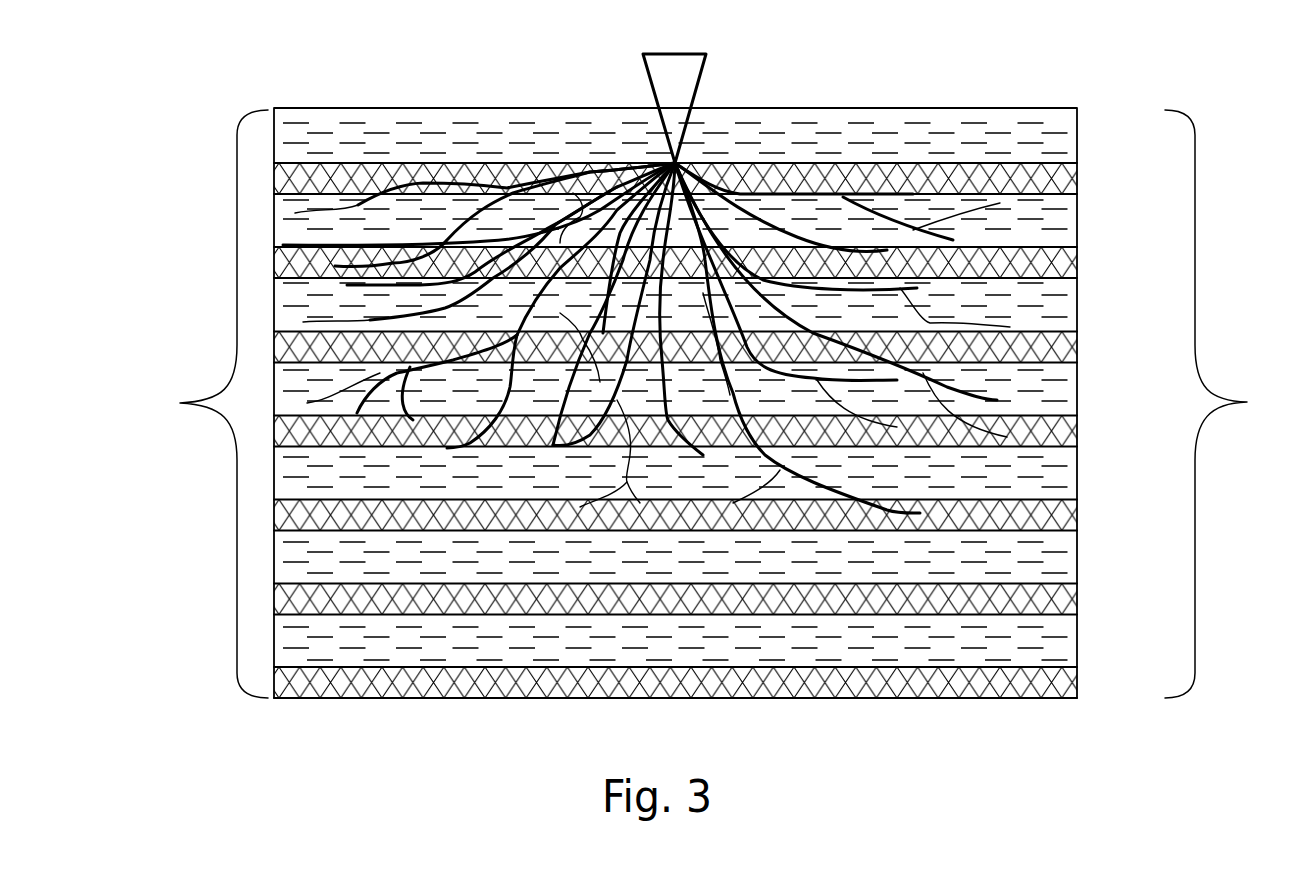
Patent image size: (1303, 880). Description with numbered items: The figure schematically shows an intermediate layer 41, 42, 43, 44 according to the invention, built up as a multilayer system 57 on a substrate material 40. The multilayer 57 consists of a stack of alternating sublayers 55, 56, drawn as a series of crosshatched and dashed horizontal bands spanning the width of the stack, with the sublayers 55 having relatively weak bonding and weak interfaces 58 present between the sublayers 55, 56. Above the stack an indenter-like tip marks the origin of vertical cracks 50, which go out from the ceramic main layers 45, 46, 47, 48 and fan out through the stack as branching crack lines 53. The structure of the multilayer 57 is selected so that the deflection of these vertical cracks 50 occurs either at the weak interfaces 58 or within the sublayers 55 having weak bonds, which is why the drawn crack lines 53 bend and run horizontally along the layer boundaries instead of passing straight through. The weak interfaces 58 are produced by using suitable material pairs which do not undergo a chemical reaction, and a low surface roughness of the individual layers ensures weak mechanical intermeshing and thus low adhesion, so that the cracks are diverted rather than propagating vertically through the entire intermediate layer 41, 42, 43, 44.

The substrate material 40 is at (675, 421).
The intermediate layer 41 is at (205, 404).
The intermediate layer 42 is at (158, 374).
The intermediate layer 43 is at (158, 433).
The intermediate layer 44 is at (158, 493).
The ceramic main layer 45 is at (468, 402).
The ceramic main layer 46 is at (526, 402).
The ceramic main layer 47 is at (582, 402).
The ceramic main layer 48 is at (639, 402).
The vertical cracks 50 is at (686, 73).
The impact damage cracks 53 is at (760, 160).
The sublayer having relatively weak bonding 55 is at (1073, 178).
The sublayer 56 is at (1077, 130).
The multilayer system 57 is at (1224, 404).
The weak interfaces 58 is at (932, 176).